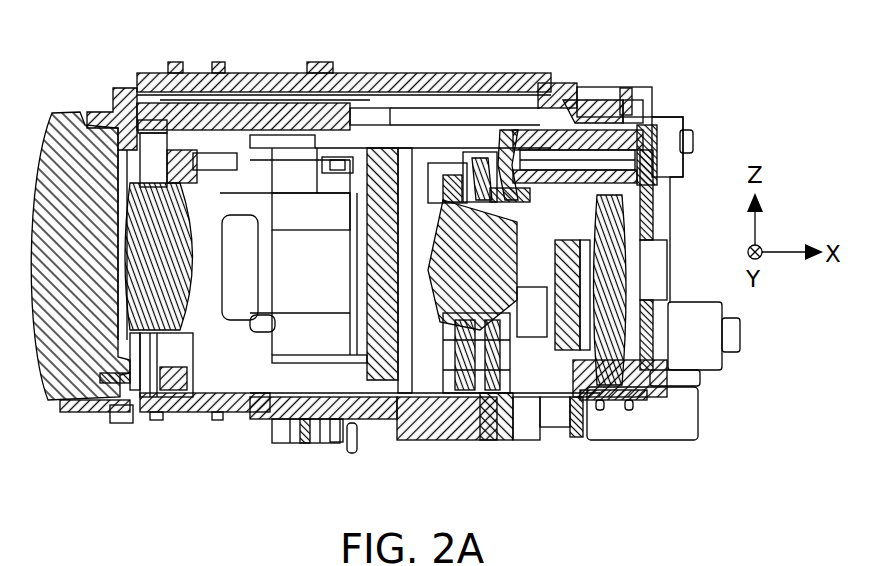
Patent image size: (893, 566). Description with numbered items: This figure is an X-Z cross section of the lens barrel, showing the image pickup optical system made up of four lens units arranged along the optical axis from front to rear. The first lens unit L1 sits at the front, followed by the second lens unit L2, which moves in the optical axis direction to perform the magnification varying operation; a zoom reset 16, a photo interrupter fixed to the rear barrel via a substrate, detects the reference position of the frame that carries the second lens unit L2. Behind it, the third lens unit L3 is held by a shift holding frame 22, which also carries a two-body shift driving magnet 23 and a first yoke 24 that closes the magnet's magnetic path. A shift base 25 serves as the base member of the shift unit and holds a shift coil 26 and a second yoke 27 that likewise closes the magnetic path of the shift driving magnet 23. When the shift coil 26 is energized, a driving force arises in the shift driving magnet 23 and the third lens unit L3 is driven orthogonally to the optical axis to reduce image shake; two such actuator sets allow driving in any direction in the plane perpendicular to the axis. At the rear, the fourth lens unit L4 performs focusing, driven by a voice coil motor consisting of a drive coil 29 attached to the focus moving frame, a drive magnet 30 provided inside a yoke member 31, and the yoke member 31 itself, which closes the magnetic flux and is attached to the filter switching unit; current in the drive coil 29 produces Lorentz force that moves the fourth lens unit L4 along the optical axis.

The zoom reset 16 is at (333, 170).
The shift holding frame 22 is at (443, 190).
The shift driving magnet 23 is at (470, 393).
The first yoke 24 is at (462, 322).
The shift base 25 is at (493, 135).
The shift coil 26 is at (494, 420).
The second yoke 27 is at (525, 425).
The drive coil 29 is at (645, 223).
The drive magnet 30 is at (653, 187).
The yoke member 31 is at (577, 110).
The first lens unit L1 is at (88, 333).
The second lens unit L2 is at (151, 333).
The third lens unit L3 is at (455, 290).
The fourth lens unit L4 is at (580, 370).